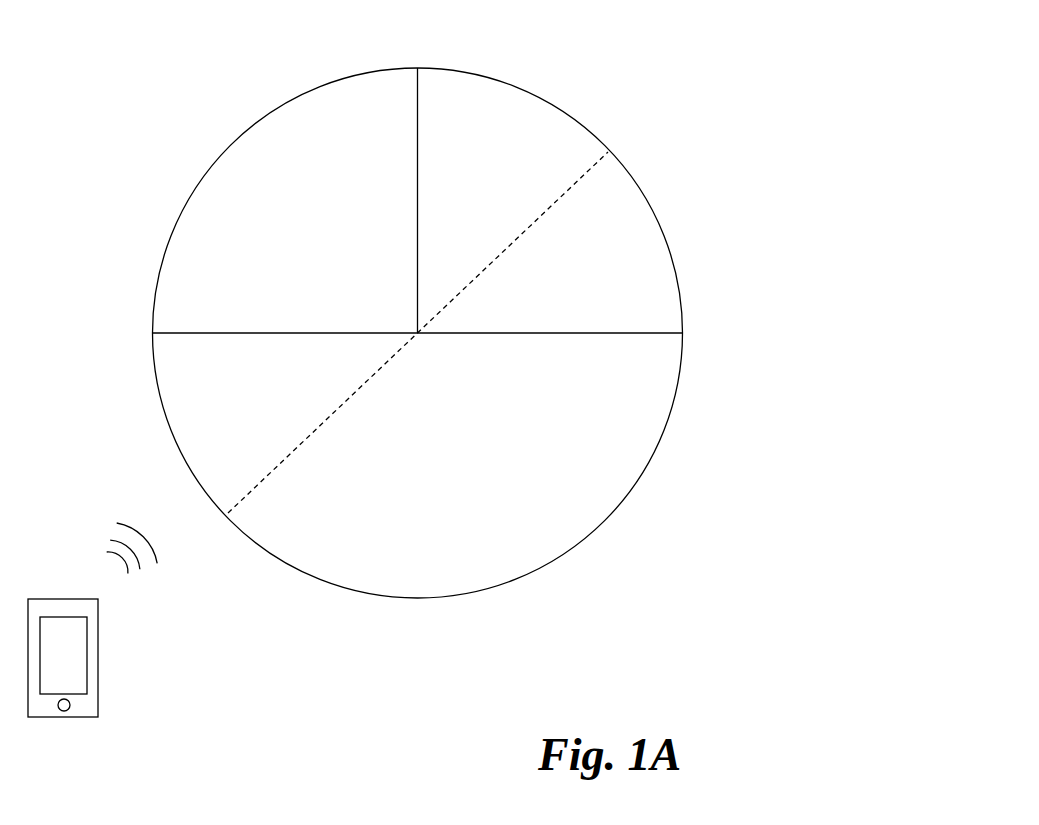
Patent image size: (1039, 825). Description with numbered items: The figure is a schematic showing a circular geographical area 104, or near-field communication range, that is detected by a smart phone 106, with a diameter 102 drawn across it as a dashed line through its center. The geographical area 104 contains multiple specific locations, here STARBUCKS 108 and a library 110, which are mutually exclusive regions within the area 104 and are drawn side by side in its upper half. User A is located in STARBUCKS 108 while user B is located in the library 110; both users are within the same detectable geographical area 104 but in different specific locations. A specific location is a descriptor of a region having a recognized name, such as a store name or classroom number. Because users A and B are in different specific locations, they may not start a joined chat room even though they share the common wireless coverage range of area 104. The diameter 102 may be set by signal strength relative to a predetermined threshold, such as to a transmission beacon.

The diameter 102 is at (317, 430).
The geographical area 104 is at (605, 523).
The smart phone 106 is at (98, 707).
The STARBUCKS 108 is at (330, 113).
The library 110 is at (523, 115).